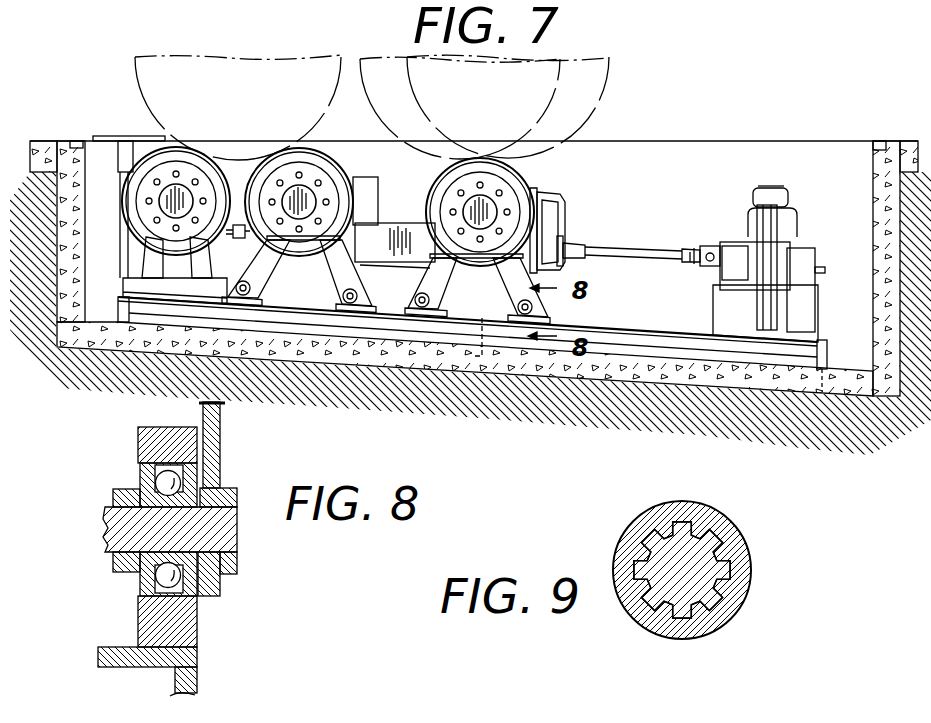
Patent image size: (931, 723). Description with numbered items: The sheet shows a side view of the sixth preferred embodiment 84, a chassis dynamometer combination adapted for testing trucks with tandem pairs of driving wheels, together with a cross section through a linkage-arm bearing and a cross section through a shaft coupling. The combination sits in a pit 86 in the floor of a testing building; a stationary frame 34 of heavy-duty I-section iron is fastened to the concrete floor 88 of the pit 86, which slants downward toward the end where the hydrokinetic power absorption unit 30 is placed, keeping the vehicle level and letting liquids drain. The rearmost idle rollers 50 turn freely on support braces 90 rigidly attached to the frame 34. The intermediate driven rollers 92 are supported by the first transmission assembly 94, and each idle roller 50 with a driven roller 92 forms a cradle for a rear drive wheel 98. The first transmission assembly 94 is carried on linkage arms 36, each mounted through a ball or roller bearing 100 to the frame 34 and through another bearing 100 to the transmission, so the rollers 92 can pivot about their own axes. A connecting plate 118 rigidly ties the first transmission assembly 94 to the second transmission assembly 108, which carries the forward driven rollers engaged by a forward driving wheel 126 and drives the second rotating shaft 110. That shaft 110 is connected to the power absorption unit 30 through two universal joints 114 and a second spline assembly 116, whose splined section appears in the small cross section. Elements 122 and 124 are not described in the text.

In FIG. 7, the hydrokinetic power absorption unit 30 is at (778, 262).
In FIG. 7, the stationary frame 34 is at (615, 365).
In FIG. 8, the stationary frame 34 is at (200, 691).
In FIG. 7, the linkage arms 36 is at (330, 273).
In FIG. 8, the linkage arms 36 is at (222, 432).
In FIG. 7, the idle rollers 50 is at (193, 147).
In FIG. 7, the sixth preferred embodiment 84 is at (737, 415).
In FIG. 7, the pit 86 is at (858, 394).
In FIG. 7, the floor 88 is at (540, 372).
In FIG. 7, the support braces 90 is at (153, 290).
In FIG. 7, the driven rollers 92 is at (324, 148).
In FIG. 7, the first transmission assembly 94 is at (376, 190).
In FIG. 7, the rear drive wheel 98 is at (175, 57).
In FIG. 7, the ball or roller bearing 100 is at (243, 296).
In FIG. 8, the ball or roller bearing 100 is at (142, 591).
In FIG. 7, the second transmission assembly 108 is at (555, 200).
In FIG. 7, the second rotating shaft 110 is at (630, 250).
In FIG. 9, the second rotating shaft 110 is at (655, 558).
In FIG. 7, the universal joints 114 is at (582, 245).
In FIG. 7, the second spline assembly 116 is at (692, 262).
In FIG. 9, the second spline assembly 116 is at (749, 582).
In FIG. 7, the connecting member or plate 118 is at (389, 225).
In FIG. 7, the wall cap 122 is at (78, 141).
In FIG. 7, the wall liner plate 124 is at (78, 172).
In FIG. 7, the forward driving wheel 126 is at (552, 56).